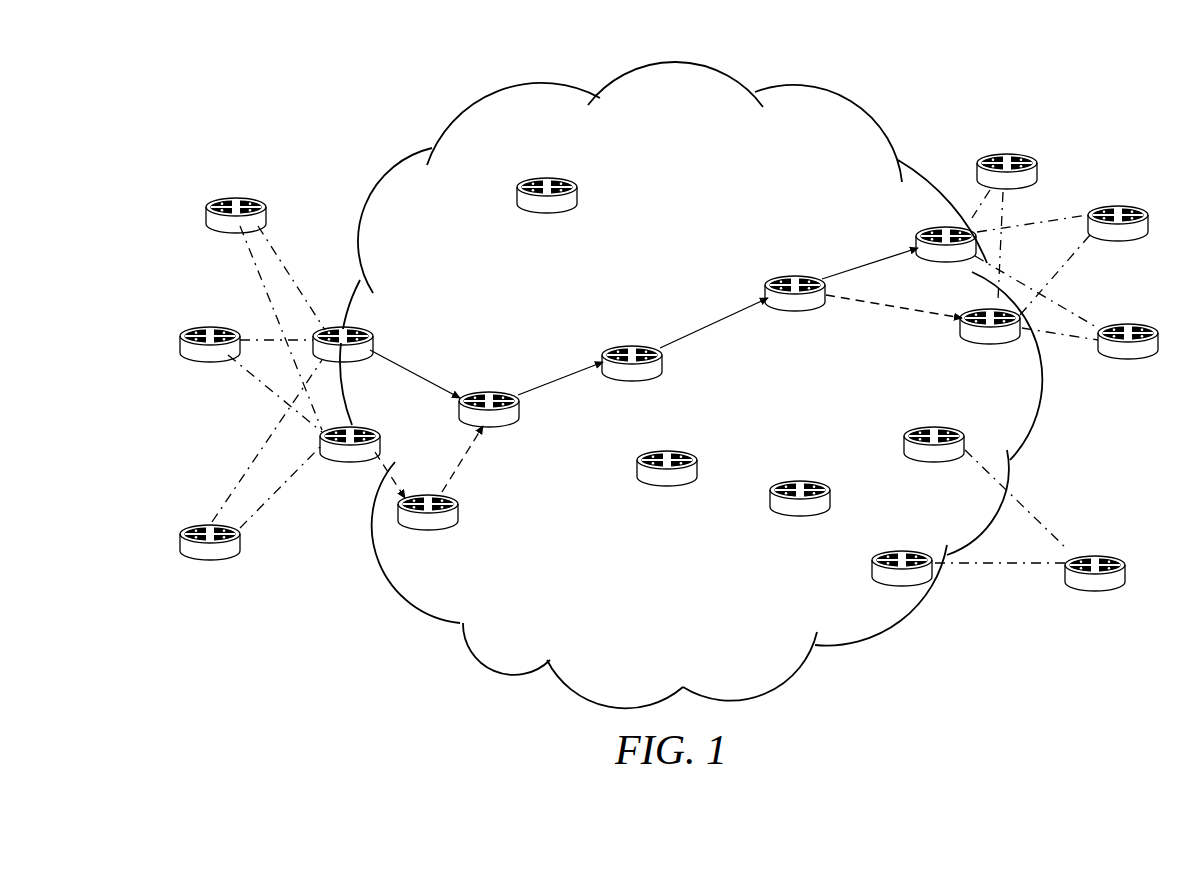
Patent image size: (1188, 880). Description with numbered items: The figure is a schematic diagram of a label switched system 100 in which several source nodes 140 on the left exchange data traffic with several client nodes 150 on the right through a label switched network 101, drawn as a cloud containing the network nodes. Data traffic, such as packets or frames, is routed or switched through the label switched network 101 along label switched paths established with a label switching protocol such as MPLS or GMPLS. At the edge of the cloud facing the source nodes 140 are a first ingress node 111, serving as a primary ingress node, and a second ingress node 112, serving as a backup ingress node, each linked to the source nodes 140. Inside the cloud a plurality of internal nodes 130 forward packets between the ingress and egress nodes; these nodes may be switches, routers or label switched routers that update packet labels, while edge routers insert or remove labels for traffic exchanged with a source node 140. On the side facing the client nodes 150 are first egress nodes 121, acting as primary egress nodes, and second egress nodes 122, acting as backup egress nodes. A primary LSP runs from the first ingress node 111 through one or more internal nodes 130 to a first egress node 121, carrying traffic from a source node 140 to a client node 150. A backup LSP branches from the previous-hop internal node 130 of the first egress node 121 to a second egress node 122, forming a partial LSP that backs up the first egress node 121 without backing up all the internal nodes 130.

The label switched system 100 is at (292, 82).
The label switched network 101 is at (838, 100).
The first ingress node 111 is at (375, 342).
The second ingress node 112 is at (353, 427).
The first egress node 121 is at (932, 228).
The second egress node 122 is at (982, 345).
The internal node 130 is at (578, 192).
The source node 140 is at (268, 214).
The client node 150 is at (1008, 152).